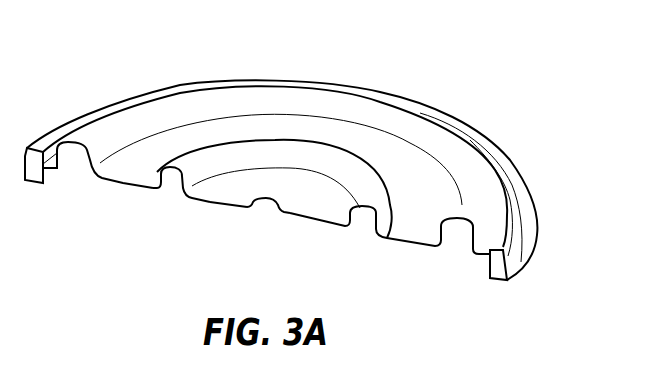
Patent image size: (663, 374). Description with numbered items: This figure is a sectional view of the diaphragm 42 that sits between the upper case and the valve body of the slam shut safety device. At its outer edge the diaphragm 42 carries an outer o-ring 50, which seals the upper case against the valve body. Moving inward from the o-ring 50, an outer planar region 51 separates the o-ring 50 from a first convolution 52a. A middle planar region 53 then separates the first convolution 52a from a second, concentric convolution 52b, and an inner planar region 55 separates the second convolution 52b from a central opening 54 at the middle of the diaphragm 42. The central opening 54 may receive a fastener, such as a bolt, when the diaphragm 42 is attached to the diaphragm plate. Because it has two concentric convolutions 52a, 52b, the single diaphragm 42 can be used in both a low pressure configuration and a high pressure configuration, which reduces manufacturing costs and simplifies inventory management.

The diaphragm 42 is at (485, 84).
The outer o-ring 50 is at (523, 250).
The outer planar region 51 is at (45, 186).
The first convolution 52a is at (483, 210).
The second convolution 52b is at (229, 162).
The middle planar region 53 is at (123, 184).
The central opening 54 is at (263, 205).
The inner planar region 55 is at (208, 202).